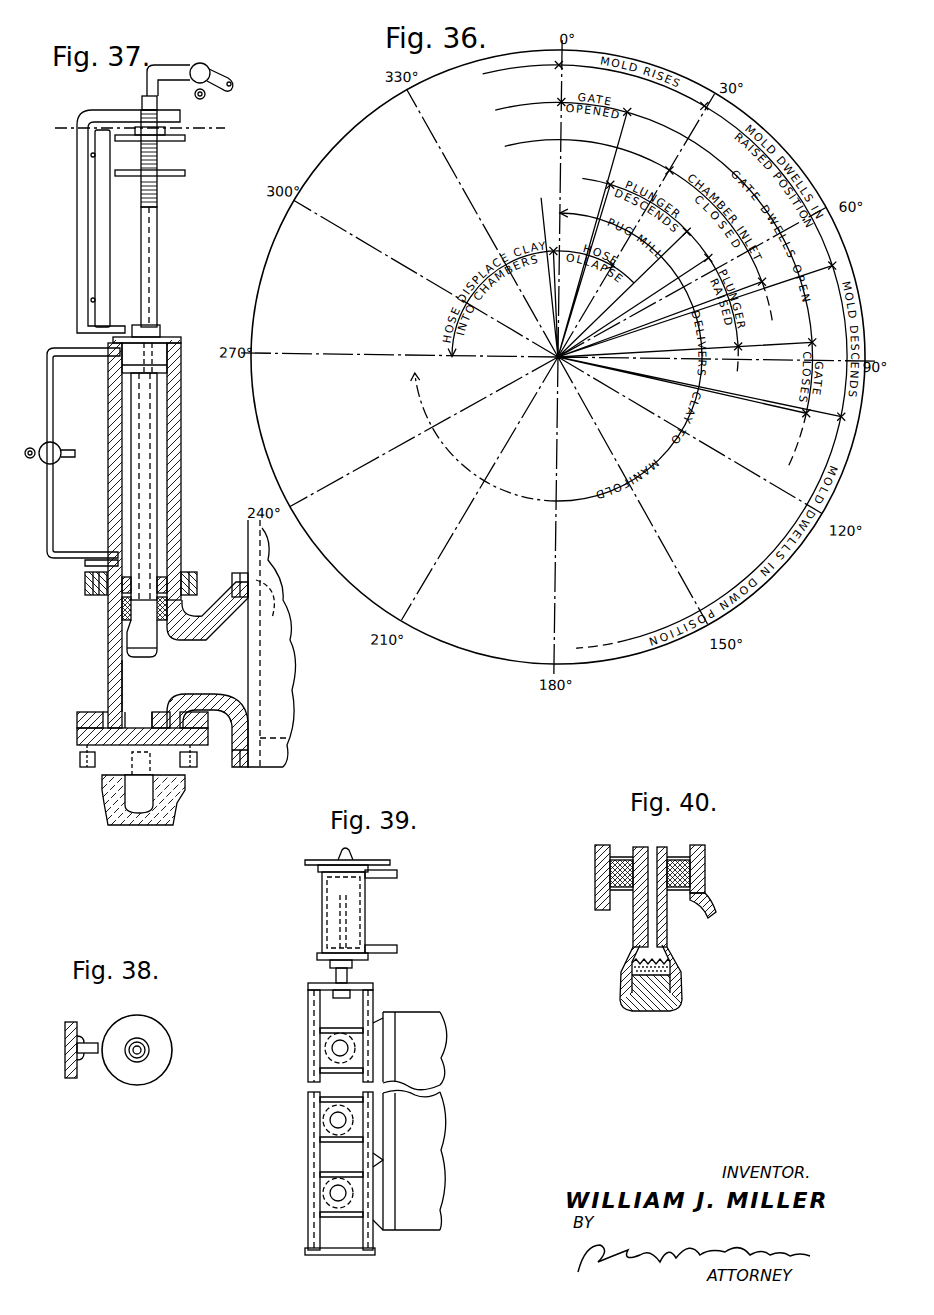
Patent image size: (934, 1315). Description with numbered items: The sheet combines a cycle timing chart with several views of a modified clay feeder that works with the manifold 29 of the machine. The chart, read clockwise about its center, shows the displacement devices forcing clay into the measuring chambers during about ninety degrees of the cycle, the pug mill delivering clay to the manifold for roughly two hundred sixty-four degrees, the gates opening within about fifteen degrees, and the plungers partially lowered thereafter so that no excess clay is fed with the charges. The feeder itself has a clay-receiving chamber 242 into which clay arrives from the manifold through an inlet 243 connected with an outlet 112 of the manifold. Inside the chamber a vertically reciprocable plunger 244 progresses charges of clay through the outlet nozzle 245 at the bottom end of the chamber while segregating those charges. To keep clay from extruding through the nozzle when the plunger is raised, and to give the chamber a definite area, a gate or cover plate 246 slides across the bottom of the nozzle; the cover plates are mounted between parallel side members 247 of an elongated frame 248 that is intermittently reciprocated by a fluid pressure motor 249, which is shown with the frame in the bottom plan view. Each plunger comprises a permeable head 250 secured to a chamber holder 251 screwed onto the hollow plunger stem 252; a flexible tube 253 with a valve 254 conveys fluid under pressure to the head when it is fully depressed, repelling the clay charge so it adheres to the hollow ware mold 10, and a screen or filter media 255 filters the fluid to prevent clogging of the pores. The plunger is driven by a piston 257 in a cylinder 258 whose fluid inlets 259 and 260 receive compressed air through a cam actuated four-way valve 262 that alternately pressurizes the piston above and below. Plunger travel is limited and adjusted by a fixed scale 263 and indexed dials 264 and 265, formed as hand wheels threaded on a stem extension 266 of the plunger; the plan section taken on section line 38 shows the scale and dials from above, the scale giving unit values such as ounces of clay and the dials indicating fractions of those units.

In FIG. 37, the hollow ware mold 10 is at (192, 805).
In FIG. 37, the manifold 29 is at (284, 684).
In FIG. 39, the manifold 29 is at (429, 1024).
In FIG. 37, the section line 38— 38 is at (221, 118).
In FIG. 37, the outlet of the manifold 112 is at (272, 618).
In FIG. 37, the clay-receiving chamber 242 is at (137, 684).
In FIG. 37, the inlet 243 is at (212, 645).
In FIG. 37, the plunger 244 is at (166, 487).
In FIG. 40, the plunger 244 is at (626, 858).
In FIG. 37, the outlet nozzle 245 is at (137, 717).
In FIG. 39, the outlet nozzle 245 is at (312, 1198).
In FIG. 37, the gate or cover plate 246 is at (112, 752).
In FIG. 39, the gate or cover plate 246 is at (324, 1185).
In FIG. 37, the side members 247 is at (205, 752).
In FIG. 39, the side members 247 is at (372, 997).
In FIG. 37, the elongated frame 248 is at (212, 734).
In FIG. 39, the elongated frame 248 is at (300, 1265).
In FIG. 39, the fluid pressure motor 249 is at (365, 905).
In FIG. 37, the permeable head 250 is at (135, 655).
In FIG. 40, the permeable head 250 is at (673, 1004).
In FIG. 37, the chamber holder 251 is at (138, 641).
In FIG. 40, the chamber holder 251 is at (682, 952).
In FIG. 37, the hollow plunger stem 252 is at (152, 542).
In FIG. 40, the hollow plunger stem 252 is at (652, 849).
In FIG. 37, the flexible tube 253 is at (221, 78).
In FIG. 37, the valve 254 is at (203, 66).
In FIG. 40, the screen or filter media 255 is at (628, 973).
In FIG. 37, the piston 257 is at (158, 369).
In FIG. 37, the cylinder 258 is at (181, 430).
In FIG. 37, the fluid inlet 259 is at (86, 349).
In FIG. 37, the fluid inlet 260 is at (84, 566).
In FIG. 37, the cam actuated four-way valve 262 is at (57, 446).
In FIG. 37, the fixed scale 263 is at (103, 262).
In FIG. 38, the fixed scale 263 is at (92, 1054).
In FIG. 37, the indexed dial 264 is at (181, 140).
In FIG. 38, the indexed dial 264 is at (172, 1050).
In FIG. 37, the indexed dial 265 is at (181, 177).
In FIG. 37, the stem extension 266 is at (158, 262).
In FIG. 38, the stem extension 266 is at (141, 1040).